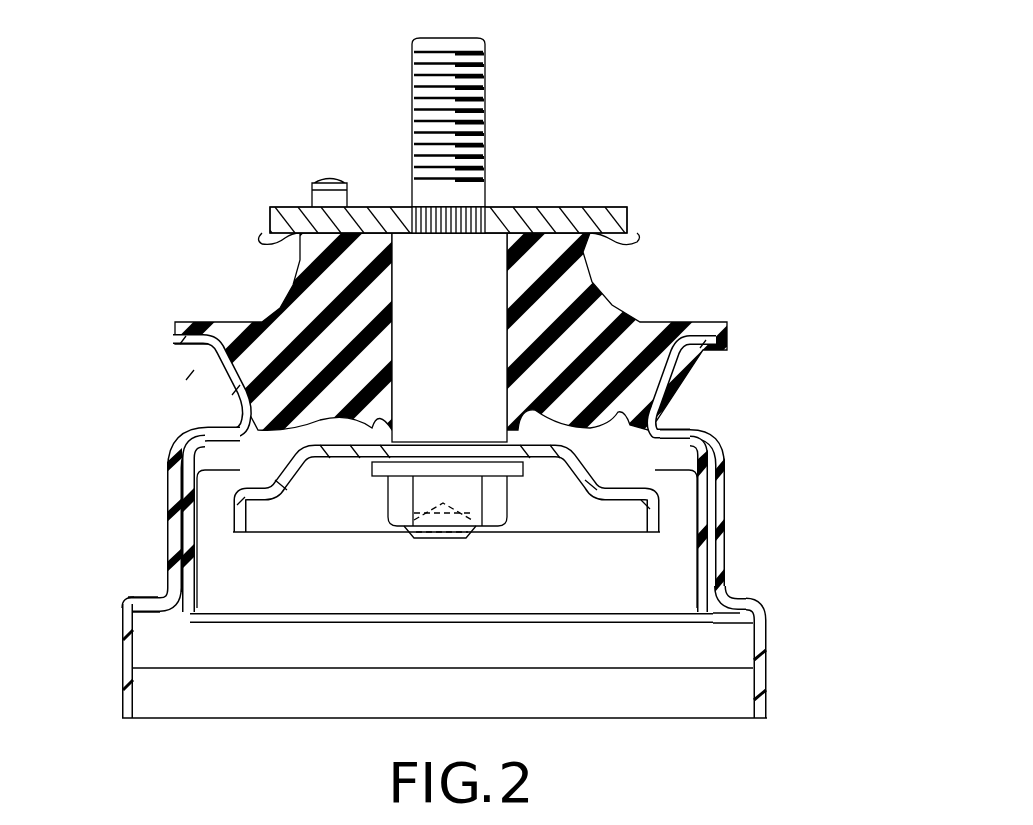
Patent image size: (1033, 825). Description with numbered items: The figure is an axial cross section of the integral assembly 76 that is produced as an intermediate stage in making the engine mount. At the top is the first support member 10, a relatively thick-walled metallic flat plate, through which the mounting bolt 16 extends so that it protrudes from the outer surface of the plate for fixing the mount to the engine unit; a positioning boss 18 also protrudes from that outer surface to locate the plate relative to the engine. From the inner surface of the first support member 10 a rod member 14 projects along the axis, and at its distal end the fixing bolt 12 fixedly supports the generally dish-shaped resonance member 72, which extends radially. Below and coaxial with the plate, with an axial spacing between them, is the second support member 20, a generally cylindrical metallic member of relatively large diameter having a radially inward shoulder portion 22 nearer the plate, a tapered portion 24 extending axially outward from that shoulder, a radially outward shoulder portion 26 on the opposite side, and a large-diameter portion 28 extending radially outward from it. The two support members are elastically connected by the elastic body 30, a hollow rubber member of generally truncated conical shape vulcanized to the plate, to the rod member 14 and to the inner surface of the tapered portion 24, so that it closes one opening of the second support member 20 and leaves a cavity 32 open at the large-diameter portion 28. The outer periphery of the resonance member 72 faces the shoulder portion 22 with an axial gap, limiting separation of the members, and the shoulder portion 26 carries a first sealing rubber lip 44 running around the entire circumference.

The first support member 10 is at (553, 218).
The fixing bolt 12 is at (412, 537).
The rod member 14 is at (495, 284).
The mounting bolt 16 is at (486, 60).
The positioning boss 18 is at (330, 192).
The second support member 20 is at (733, 538).
The radially inward shoulder portion 22 is at (212, 422).
The tapered portion 24 is at (222, 380).
The radially outward shoulder portion 26 is at (145, 598).
The large-diameter portion 28 is at (128, 665).
The elastic body 30 is at (283, 303).
The cavity 32 is at (214, 600).
The first sealing rubber lip 44 is at (728, 624).
The resonance member 72 is at (597, 470).
The integral assembly 76 is at (630, 78).